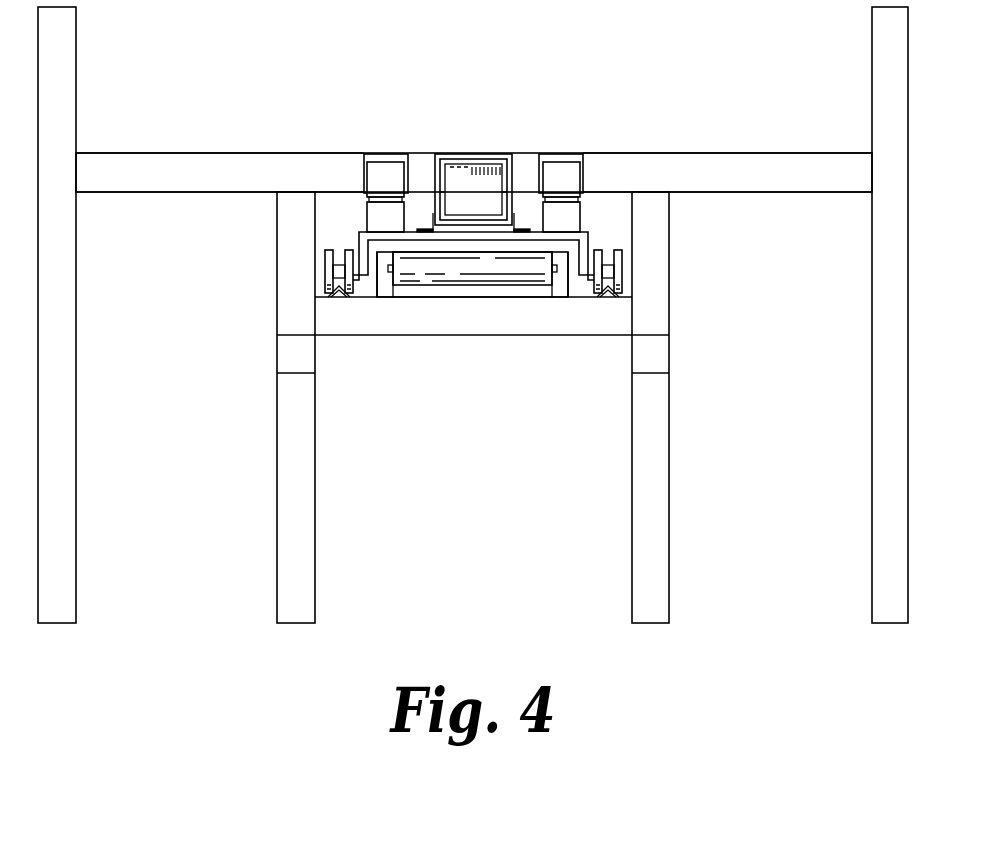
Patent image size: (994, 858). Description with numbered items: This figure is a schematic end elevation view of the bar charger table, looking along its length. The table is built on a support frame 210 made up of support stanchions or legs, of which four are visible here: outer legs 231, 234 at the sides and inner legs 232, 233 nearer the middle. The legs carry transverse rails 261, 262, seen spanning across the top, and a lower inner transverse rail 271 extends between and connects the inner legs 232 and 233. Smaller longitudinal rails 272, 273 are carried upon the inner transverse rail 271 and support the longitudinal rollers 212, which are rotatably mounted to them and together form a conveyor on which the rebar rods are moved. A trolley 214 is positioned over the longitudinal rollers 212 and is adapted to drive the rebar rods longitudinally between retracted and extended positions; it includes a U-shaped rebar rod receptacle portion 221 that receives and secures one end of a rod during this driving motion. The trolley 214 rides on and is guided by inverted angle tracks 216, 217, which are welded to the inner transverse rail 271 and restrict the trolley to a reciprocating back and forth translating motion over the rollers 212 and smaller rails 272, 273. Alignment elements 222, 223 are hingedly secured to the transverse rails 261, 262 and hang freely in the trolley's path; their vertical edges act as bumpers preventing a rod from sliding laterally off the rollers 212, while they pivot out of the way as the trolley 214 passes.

The support frame 210 is at (236, 120).
The longitudinal rollers 212 is at (462, 263).
The trolley 214 is at (486, 135).
The inverted angle track 216 is at (340, 296).
The inverted angle track 217 is at (607, 296).
The U-shaped rebar rod receptacle portion 221 is at (475, 220).
The alignment element 222 is at (366, 218).
The alignment element 223 is at (581, 217).
The leg 231 is at (62, 566).
The inner leg 232 is at (300, 566).
The inner leg 233 is at (655, 560).
The leg 234 is at (890, 556).
The transverse rail 261 is at (148, 173).
The transverse rail 262 is at (776, 173).
The inner transverse rail 271 is at (507, 315).
The smaller longitudinal rail 272 is at (385, 288).
The smaller longitudinal rail 273 is at (563, 288).